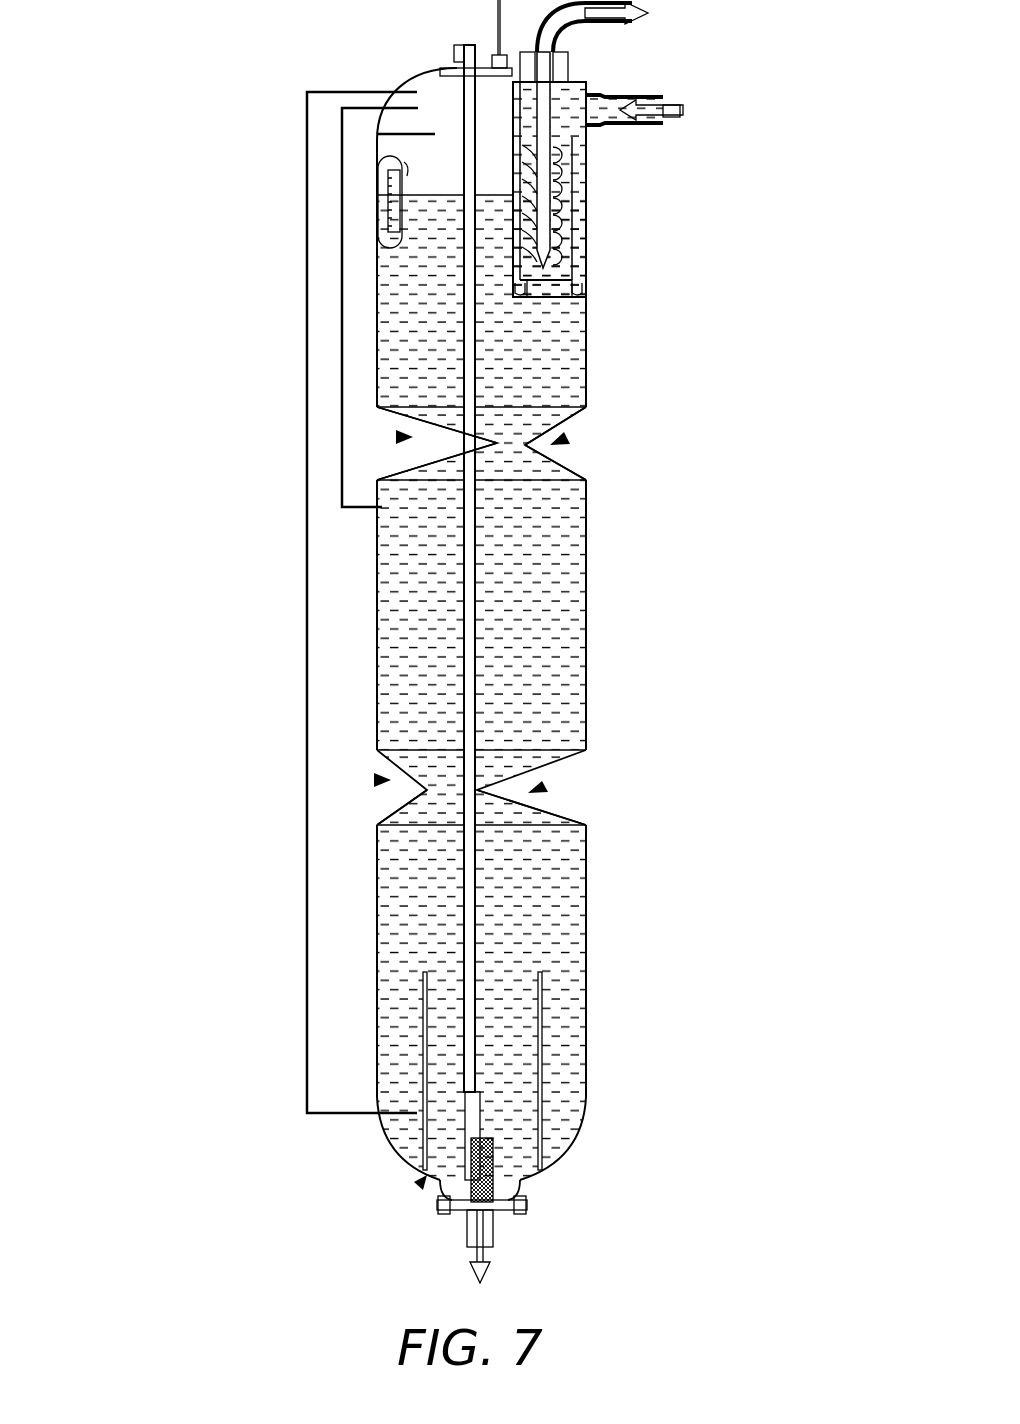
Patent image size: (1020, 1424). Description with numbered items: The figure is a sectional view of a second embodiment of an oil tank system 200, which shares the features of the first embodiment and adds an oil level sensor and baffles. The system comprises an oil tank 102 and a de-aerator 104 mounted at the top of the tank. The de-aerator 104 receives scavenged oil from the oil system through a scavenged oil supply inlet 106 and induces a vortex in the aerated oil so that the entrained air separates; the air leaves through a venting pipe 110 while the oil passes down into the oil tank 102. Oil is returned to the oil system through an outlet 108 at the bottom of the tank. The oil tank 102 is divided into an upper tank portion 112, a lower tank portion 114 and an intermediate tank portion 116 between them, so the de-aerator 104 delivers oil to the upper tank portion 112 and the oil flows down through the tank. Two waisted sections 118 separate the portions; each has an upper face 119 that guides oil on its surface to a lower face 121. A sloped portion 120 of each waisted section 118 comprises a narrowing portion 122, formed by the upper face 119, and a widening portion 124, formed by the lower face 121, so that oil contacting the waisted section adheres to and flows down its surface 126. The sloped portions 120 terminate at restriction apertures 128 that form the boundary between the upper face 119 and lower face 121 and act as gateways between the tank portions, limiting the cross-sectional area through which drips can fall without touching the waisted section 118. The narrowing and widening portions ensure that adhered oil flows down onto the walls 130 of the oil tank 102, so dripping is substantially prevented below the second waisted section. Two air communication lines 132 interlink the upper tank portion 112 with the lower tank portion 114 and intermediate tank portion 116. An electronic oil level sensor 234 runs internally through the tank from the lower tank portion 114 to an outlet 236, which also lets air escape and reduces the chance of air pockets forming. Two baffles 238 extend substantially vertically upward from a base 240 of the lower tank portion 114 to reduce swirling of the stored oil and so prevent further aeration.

The oil tank system 200 is at (200, 63).
The oil tank 102 is at (586, 554).
The de-aerator 104 is at (577, 217).
The scavenged oil supply inlet 106 is at (690, 118).
The outlet 108 is at (495, 1228).
The venting pipe 110 is at (565, 30).
The upper tank portion 112 is at (378, 285).
The lower tank portion 114 is at (378, 960).
The intermediate tank portion 116 is at (378, 626).
The waisted section 118 is at (405, 437).
The upper face 119 is at (523, 445).
The sloped portion 120 is at (560, 439).
The lower face 121 is at (443, 460).
The narrowing portion 122 is at (523, 412).
The widening portion 124 is at (512, 458).
The surface 126 is at (430, 412).
The restriction aperture 128 is at (497, 443).
The walls 130 is at (400, 668).
The air communication lines 132 is at (312, 321).
The electronic oil level sensor 234 is at (477, 600).
The outlet 236 is at (455, 62).
The baffles 238 is at (427, 1013).
The base 240 is at (420, 1185).